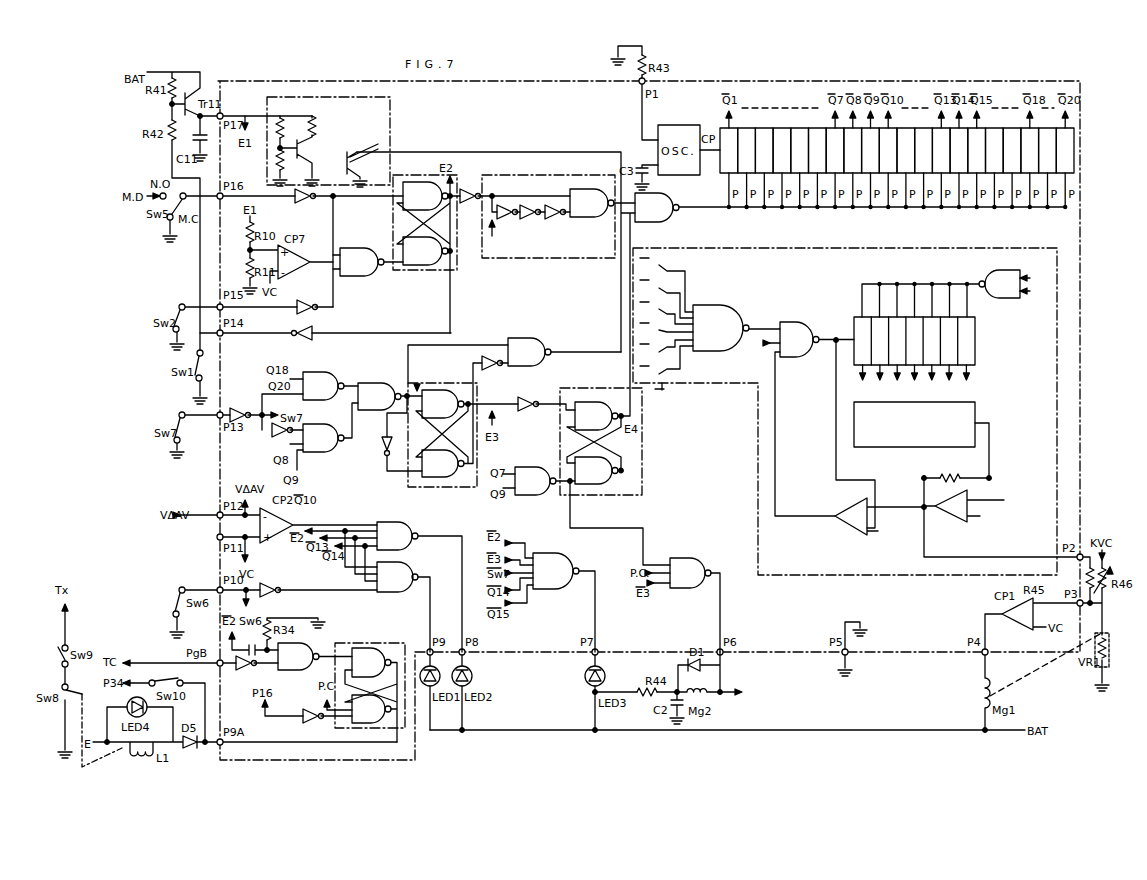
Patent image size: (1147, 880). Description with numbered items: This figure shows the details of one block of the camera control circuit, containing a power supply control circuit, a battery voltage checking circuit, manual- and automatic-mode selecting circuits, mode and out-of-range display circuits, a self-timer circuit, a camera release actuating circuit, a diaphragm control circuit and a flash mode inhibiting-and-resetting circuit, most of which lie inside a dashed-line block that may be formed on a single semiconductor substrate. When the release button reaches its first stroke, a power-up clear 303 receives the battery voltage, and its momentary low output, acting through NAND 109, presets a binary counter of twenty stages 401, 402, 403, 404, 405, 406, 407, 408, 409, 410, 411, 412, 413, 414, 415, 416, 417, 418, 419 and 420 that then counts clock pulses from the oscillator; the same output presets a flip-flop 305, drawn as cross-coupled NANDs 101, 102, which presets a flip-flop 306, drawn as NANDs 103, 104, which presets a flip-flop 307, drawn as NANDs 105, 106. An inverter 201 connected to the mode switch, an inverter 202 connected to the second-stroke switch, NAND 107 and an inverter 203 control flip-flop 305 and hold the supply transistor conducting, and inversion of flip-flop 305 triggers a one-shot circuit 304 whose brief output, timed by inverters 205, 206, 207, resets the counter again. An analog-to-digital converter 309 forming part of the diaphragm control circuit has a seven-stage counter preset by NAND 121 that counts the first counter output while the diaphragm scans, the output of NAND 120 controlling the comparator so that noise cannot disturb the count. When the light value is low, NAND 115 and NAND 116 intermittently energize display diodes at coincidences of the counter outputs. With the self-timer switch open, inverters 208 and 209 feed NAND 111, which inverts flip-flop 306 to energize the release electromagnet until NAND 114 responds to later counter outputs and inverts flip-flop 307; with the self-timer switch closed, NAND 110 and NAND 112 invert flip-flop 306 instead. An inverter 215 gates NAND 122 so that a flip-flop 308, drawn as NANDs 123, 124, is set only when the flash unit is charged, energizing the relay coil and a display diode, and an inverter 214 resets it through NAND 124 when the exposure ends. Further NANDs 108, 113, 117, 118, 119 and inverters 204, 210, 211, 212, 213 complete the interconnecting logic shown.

The NAND gate 101 is at (425, 196).
The NAND gate 102 is at (425, 251).
The NAND gate 103 is at (443, 404).
The NAND gate 104 is at (443, 463).
The NAND gate 105 is at (596, 416).
The NAND gate 106 is at (596, 470).
The NAND 107 is at (362, 262).
The NAND gate 108 is at (592, 203).
The NAND 109 is at (657, 207).
The NAND 110 is at (323, 386).
The NAND 111 is at (323, 438).
The NAND 112 is at (379, 396).
The NAND gate 113 is at (529, 352).
The NAND 114 is at (535, 481).
The NAND 115 is at (397, 536).
The NAND 116 is at (397, 577).
The NAND gate 117 is at (556, 571).
The NAND gate 118 is at (690, 573).
The NAND gate 119 is at (721, 328).
The NAND 120 is at (799, 339).
The NAND 121 is at (999, 284).
The NAND 122 is at (298, 656).
The NAND gate 123 is at (371, 662).
The NAND 124 is at (371, 709).
The inverter 201 is at (303, 206).
The inverter 202 is at (305, 301).
The inverter 203 is at (303, 342).
The inverter 204 is at (469, 206).
The inverter 205 is at (507, 224).
The inverter 206 is at (531, 225).
The inverter 207 is at (556, 221).
The inverter 208 is at (238, 407).
The inverter 209 is at (265, 440).
The inverter 210 is at (491, 372).
The inverter 211 is at (526, 398).
The inverter 212 is at (269, 600).
The inverter 213 is at (375, 446).
The inverter 214 is at (310, 725).
The inverter 215 is at (243, 672).
The power-up clear 303 is at (390, 109).
The one-shot circuit 304 is at (568, 262).
The flip-flop 305 is at (431, 271).
The flip-flop 306 is at (452, 382).
The flip-flop 307 is at (644, 458).
The flip-flop 308 is at (343, 645).
The analog-to-digital converter 309 is at (800, 249).
The counter stage 401 is at (731, 150).
The counter stage 402 is at (749, 150).
The counter stage 403 is at (766, 150).
The counter stage 404 is at (784, 150).
The counter stage 405 is at (802, 150).
The counter stage 406 is at (820, 150).
The counter stage 407 is at (837, 150).
The counter stage 408 is at (855, 150).
The counter stage 409 is at (873, 150).
The counter stage 410 is at (890, 150).
The counter stage 411 is at (908, 150).
The counter stage 412 is at (926, 150).
The counter stage 413 is at (943, 150).
The counter stage 414 is at (961, 150).
The counter stage 415 is at (979, 150).
The counter stage 416 is at (997, 150).
The counter stage 417 is at (1014, 150).
The counter stage 418 is at (1032, 150).
The counter stage 419 is at (1050, 150).
The counter stage 420 is at (1067, 150).